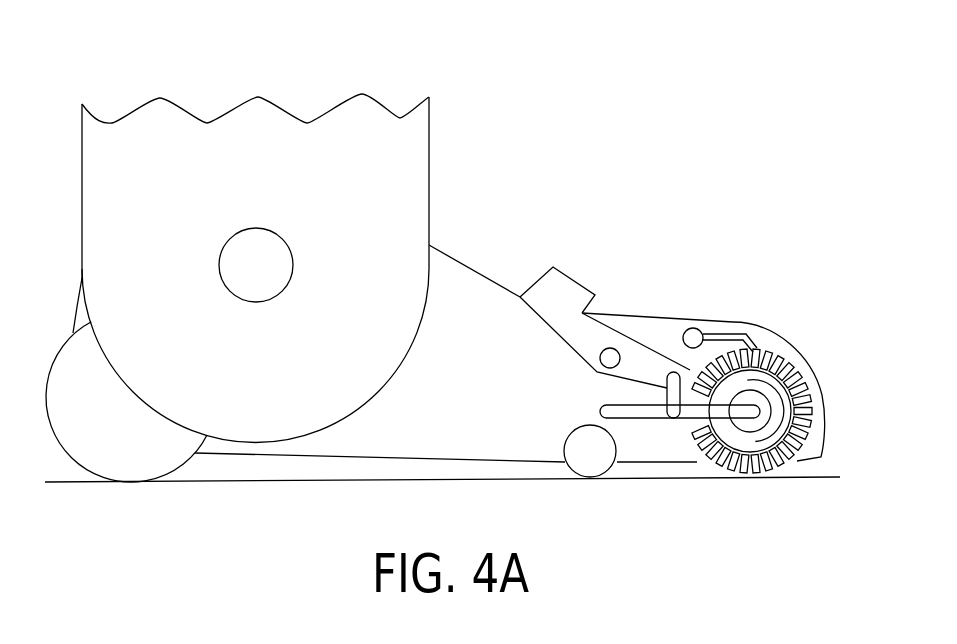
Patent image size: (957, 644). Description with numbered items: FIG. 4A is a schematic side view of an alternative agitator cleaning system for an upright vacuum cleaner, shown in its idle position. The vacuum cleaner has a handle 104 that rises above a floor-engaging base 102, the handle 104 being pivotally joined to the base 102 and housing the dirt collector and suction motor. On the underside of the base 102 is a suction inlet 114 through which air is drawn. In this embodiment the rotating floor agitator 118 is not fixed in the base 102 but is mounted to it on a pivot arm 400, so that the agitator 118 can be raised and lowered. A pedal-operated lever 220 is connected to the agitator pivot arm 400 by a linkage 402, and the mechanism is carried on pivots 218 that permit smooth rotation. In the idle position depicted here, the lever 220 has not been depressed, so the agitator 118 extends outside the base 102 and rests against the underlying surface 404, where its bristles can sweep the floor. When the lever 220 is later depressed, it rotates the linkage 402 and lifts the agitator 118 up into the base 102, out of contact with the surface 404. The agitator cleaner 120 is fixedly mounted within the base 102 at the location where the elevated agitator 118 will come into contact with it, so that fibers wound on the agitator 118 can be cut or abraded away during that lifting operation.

The handle 104 is at (418, 144).
The base 102 is at (473, 278).
The lever 220 is at (567, 287).
The pivots 218 is at (611, 348).
The agitator cleaner 120 is at (733, 335).
The rotating floor agitator 118 is at (806, 369).
The suction inlet 114 is at (704, 470).
The linkage 402 is at (667, 396).
The pivot arm 400 is at (650, 418).
The underlying surface 404 is at (280, 482).